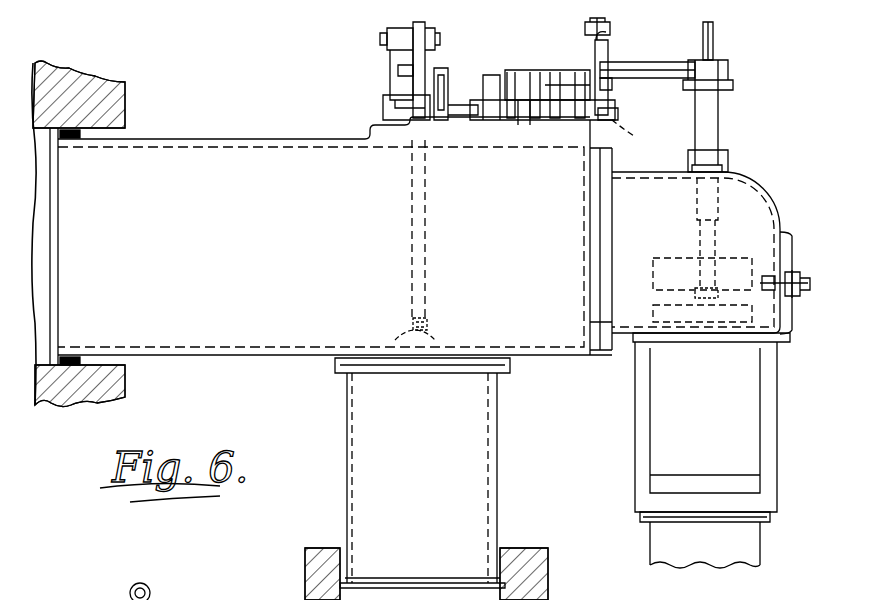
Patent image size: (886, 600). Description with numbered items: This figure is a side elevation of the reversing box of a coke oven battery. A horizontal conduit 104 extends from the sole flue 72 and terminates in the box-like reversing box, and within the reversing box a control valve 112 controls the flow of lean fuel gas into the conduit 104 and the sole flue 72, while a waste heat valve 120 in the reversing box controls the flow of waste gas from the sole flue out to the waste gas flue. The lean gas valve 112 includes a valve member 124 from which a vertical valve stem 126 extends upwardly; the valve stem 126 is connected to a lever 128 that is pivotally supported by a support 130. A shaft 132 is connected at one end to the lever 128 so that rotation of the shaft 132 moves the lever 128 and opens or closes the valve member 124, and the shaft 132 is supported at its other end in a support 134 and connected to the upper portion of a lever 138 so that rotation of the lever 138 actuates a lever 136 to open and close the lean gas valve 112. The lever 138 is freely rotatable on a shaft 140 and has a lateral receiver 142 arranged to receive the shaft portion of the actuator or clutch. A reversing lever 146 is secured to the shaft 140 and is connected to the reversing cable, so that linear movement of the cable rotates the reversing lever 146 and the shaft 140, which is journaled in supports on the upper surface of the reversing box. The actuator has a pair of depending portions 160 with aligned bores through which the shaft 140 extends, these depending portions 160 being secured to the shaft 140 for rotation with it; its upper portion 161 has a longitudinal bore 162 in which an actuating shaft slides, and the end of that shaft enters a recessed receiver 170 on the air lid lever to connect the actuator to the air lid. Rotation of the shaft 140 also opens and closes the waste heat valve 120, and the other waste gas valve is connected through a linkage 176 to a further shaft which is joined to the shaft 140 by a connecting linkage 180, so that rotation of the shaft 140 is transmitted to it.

The sole flue 72 is at (40, 300).
The conduit 104 is at (232, 259).
The control valve 112 is at (775, 308).
The valve 120 is at (448, 348).
The valve member 124 is at (790, 340).
The valve stem 126 is at (718, 239).
The lever 128 is at (718, 40).
The support 130 is at (718, 103).
The shaft 132 is at (650, 66).
The support 134 is at (620, 87).
The lever 136 is at (596, 22).
The lever 138 is at (610, 44).
The shaft 140 is at (616, 116).
The lateral receiver 142 is at (620, 135).
The reversing lever 146 is at (150, 597).
The depending portions 160 is at (530, 125).
The upper portion 161 is at (570, 72).
The longitudinal bore 162 is at (528, 72).
The recessed receiver 170 is at (495, 75).
The linkage 176 is at (427, 29).
The connecting linkage 180 is at (450, 70).